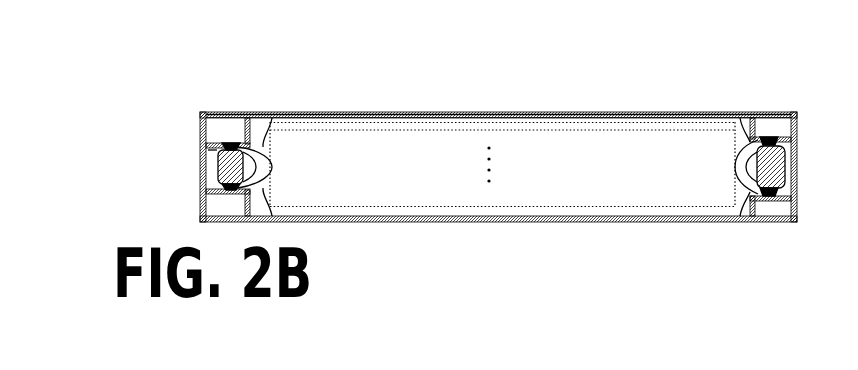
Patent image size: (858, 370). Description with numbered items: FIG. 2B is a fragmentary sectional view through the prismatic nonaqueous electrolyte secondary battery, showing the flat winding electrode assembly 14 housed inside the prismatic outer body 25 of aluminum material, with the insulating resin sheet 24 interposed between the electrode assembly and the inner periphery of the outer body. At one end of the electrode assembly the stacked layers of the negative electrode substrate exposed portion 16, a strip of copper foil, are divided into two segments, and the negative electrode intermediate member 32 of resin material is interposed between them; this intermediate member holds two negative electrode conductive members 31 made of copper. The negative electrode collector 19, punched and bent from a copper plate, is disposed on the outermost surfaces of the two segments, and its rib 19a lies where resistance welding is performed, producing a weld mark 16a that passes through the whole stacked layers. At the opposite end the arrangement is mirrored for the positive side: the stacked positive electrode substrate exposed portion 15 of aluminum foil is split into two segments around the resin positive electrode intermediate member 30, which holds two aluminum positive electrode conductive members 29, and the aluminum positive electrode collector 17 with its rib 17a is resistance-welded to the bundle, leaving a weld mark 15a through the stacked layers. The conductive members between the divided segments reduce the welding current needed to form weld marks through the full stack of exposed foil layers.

The flat winding electrode assembly 14 is at (631, 142).
The positive electrode substrate exposed portion 15 is at (710, 114).
The weld mark 15a is at (768, 137).
The negative electrode substrate exposed portion 16 is at (272, 122).
The weld mark 16a is at (231, 143).
The positive electrode collector 17 is at (794, 112).
The rib 17a is at (752, 117).
The negative electrode collector 19 is at (203, 112).
The rib 19a is at (252, 117).
The insulating resin sheet 24 is at (437, 118).
The prismatic outer body 25 is at (384, 112).
The positive electrode conductive members 29 is at (782, 150).
The positive electrode intermediate member 30 is at (792, 167).
The negative electrode conductive members 31 is at (210, 150).
The negative electrode intermediate member 32 is at (220, 167).